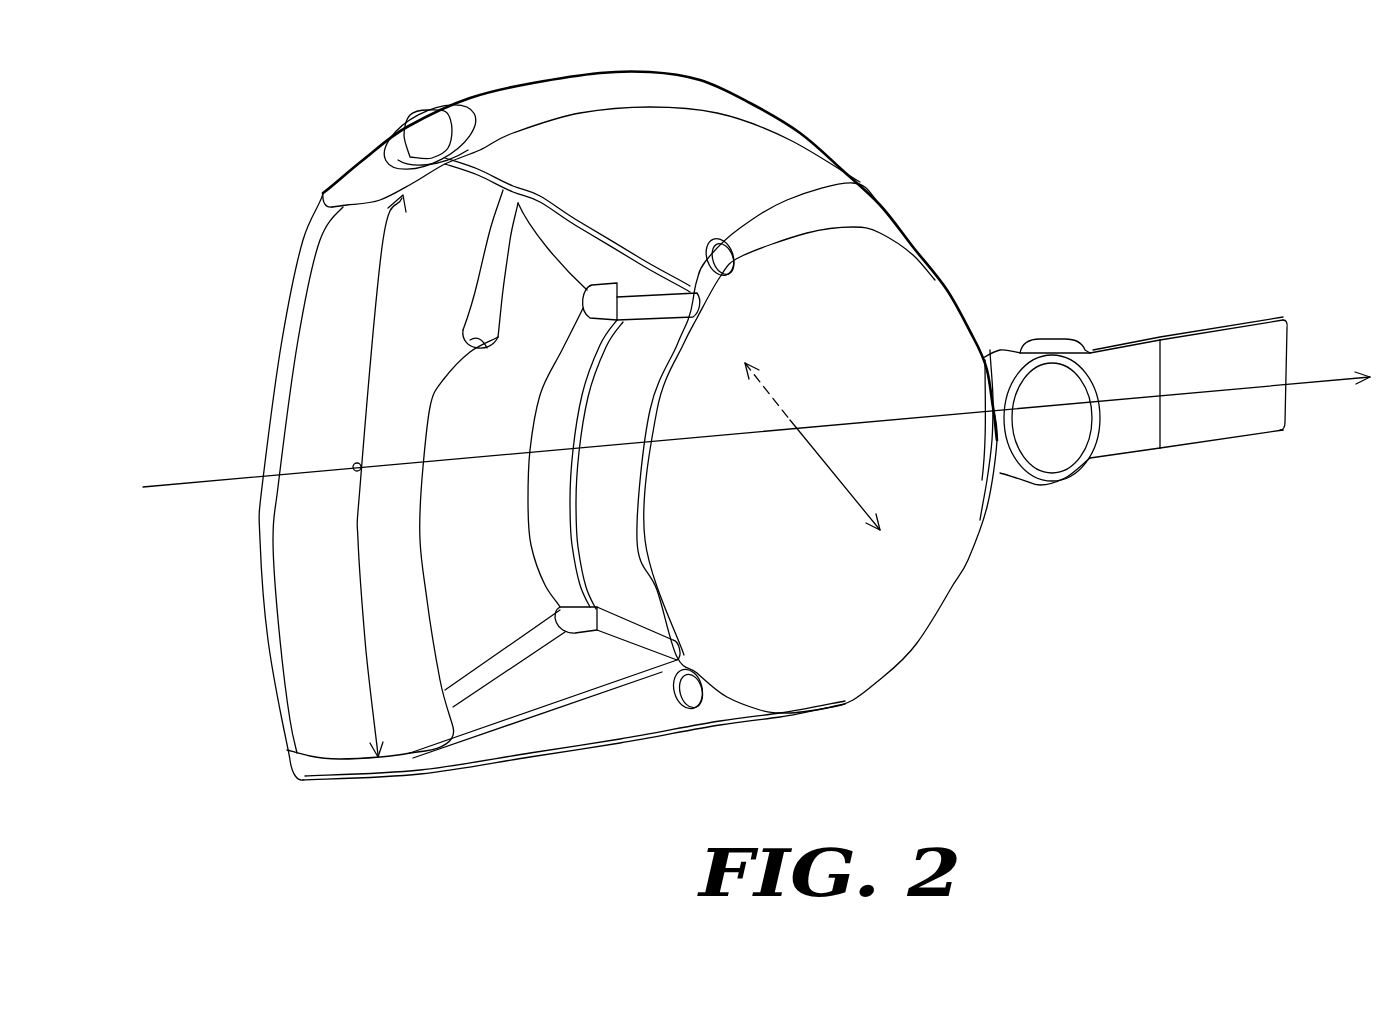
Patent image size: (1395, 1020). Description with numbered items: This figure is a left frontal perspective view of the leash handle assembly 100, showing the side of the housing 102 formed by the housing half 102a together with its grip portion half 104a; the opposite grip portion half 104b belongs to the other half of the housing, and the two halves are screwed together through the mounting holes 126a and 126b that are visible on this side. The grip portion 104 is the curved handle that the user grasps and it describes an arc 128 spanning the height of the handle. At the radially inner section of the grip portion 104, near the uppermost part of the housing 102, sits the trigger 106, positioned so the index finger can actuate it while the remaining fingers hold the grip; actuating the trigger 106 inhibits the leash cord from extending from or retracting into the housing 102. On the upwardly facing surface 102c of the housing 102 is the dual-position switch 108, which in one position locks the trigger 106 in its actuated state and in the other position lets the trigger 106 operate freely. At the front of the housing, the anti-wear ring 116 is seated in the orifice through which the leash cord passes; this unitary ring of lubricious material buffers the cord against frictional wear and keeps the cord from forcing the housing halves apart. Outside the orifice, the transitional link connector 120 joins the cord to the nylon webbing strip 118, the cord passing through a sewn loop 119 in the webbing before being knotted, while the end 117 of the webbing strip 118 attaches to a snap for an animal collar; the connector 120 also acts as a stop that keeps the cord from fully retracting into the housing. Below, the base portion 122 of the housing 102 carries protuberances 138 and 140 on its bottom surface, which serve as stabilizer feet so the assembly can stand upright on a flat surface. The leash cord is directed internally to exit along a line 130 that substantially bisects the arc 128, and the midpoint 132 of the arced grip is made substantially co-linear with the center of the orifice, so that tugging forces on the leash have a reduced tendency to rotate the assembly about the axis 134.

The leash handle assembly 100 is at (759, 428).
The housing 102 is at (893, 625).
The housing half 102a is at (730, 155).
The upwardly facing surface 102c is at (453, 122).
The grip portion 104 is at (262, 528).
The grip portion half 104a is at (330, 398).
The grip portion half 104b is at (300, 279).
The trigger 106 is at (485, 332).
The dual-position switch 108 is at (415, 125).
The anti-wear ring 116 is at (1005, 365).
The end of the webbing strip 117 is at (1290, 330).
The nylon webbing strip 118 is at (1248, 420).
The sewn loop 119 is at (1130, 368).
The transitional link connector 120 is at (1072, 450).
The base portion 122 is at (627, 715).
The mounting hole 126a is at (722, 268).
The mounting hole 126b is at (712, 685).
The arc 128 is at (378, 312).
The line 130 is at (890, 408).
The midpoint 132 is at (357, 471).
The axis 134 is at (825, 468).
The protuberance 138 is at (515, 767).
The protuberance 140 is at (778, 720).